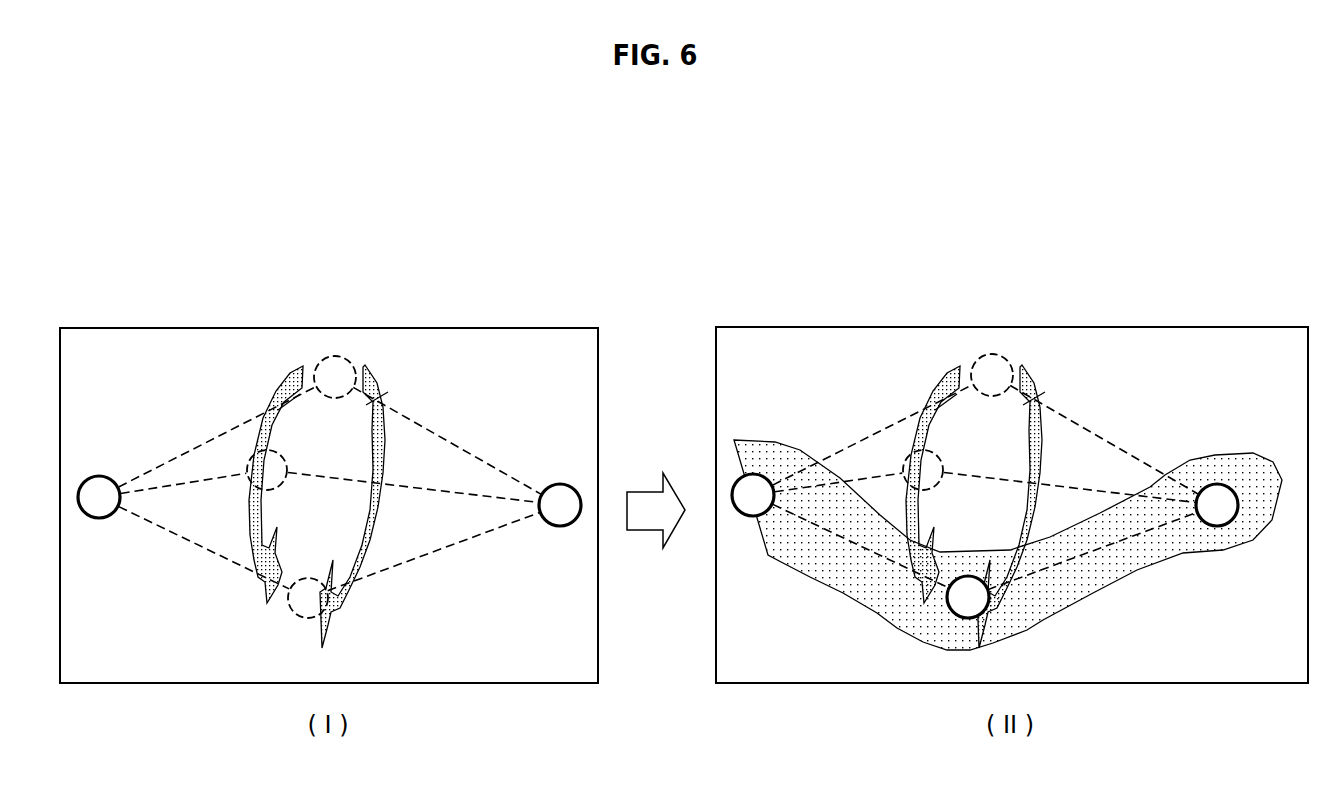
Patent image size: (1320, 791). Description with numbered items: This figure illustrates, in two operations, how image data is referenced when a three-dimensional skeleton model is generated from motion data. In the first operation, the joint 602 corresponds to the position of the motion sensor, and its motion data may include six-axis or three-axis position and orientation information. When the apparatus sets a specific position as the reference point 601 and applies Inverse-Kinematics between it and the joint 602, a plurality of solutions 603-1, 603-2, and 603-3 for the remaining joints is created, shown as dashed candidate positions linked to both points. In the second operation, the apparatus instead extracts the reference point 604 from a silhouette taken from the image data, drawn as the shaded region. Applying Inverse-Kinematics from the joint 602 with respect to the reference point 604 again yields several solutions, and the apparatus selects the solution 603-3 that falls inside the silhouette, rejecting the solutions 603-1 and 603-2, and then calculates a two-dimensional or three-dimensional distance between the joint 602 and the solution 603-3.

The reference point 601 is at (99, 477).
The joint 602 is at (560, 483).
The solution 603-1 is at (333, 354).
The solution 603-2 is at (245, 460).
The solution 603-3 is at (292, 614).
The reference point 604 is at (752, 474).